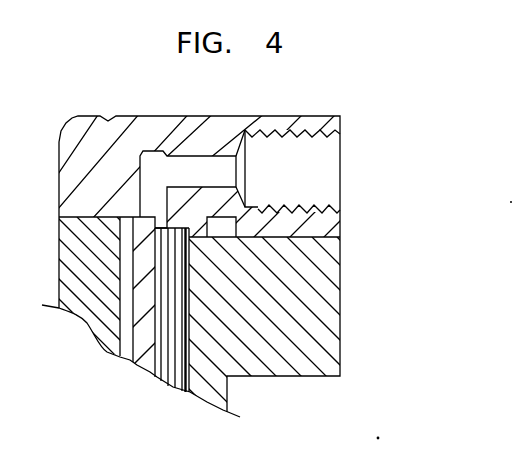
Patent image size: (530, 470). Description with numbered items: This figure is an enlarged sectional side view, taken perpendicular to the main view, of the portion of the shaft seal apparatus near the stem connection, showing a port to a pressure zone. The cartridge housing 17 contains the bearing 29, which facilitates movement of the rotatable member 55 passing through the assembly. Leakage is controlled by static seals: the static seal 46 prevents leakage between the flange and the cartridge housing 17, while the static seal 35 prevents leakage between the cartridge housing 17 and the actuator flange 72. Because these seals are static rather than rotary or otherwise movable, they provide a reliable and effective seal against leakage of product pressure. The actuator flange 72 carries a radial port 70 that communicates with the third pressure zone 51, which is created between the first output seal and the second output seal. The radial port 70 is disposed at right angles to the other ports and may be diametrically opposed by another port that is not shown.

The cartridge housing 17 is at (312, 334).
The bearing 29 is at (175, 357).
The static seal 35 is at (223, 230).
The static seal 46 is at (10, 57).
The third pressure zone 51 is at (153, 183).
The rotatable member 55 is at (100, 303).
The radial port 70 is at (300, 165).
The actuator flange 72 is at (138, 127).